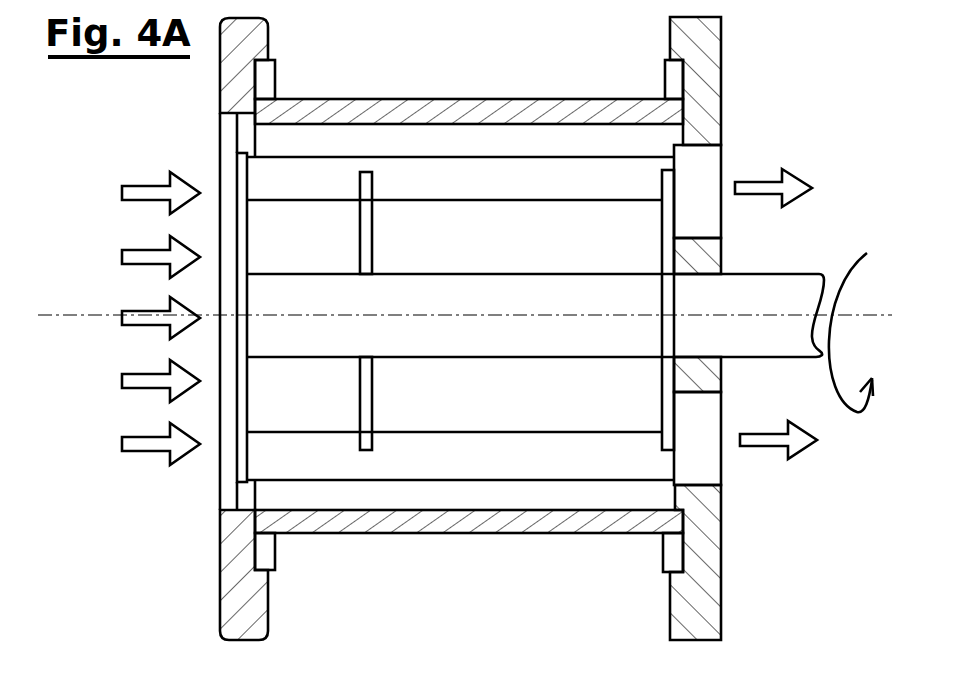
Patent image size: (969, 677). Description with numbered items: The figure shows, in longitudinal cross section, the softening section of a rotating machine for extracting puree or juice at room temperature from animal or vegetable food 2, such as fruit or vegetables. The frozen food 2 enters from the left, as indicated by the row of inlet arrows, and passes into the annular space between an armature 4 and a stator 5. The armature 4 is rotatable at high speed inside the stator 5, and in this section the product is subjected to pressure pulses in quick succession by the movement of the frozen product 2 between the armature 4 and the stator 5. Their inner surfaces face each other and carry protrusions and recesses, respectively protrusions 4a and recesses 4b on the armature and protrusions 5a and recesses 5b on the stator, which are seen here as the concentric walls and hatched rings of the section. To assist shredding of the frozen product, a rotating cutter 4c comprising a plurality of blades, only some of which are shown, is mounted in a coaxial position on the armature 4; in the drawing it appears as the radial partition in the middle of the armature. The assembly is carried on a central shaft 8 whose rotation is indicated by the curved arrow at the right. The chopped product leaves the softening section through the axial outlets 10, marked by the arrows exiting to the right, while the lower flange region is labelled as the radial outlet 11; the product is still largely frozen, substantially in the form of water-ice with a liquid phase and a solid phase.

The animal or vegetable food 2 is at (128, 194).
The armature 4 is at (220, 143).
The protrusions of the armature 4a is at (393, 155).
The recesses of the armature 4b is at (451, 200).
The rotating cutter 4c is at (358, 182).
The stator 5 is at (220, 178).
The protrusions of the stator 5a is at (518, 143).
The recesses of the stator 5b is at (618, 125).
The rotary shaft 8 is at (748, 292).
The axial outlets 10 is at (700, 178).
The radial outlet 11 is at (722, 463).